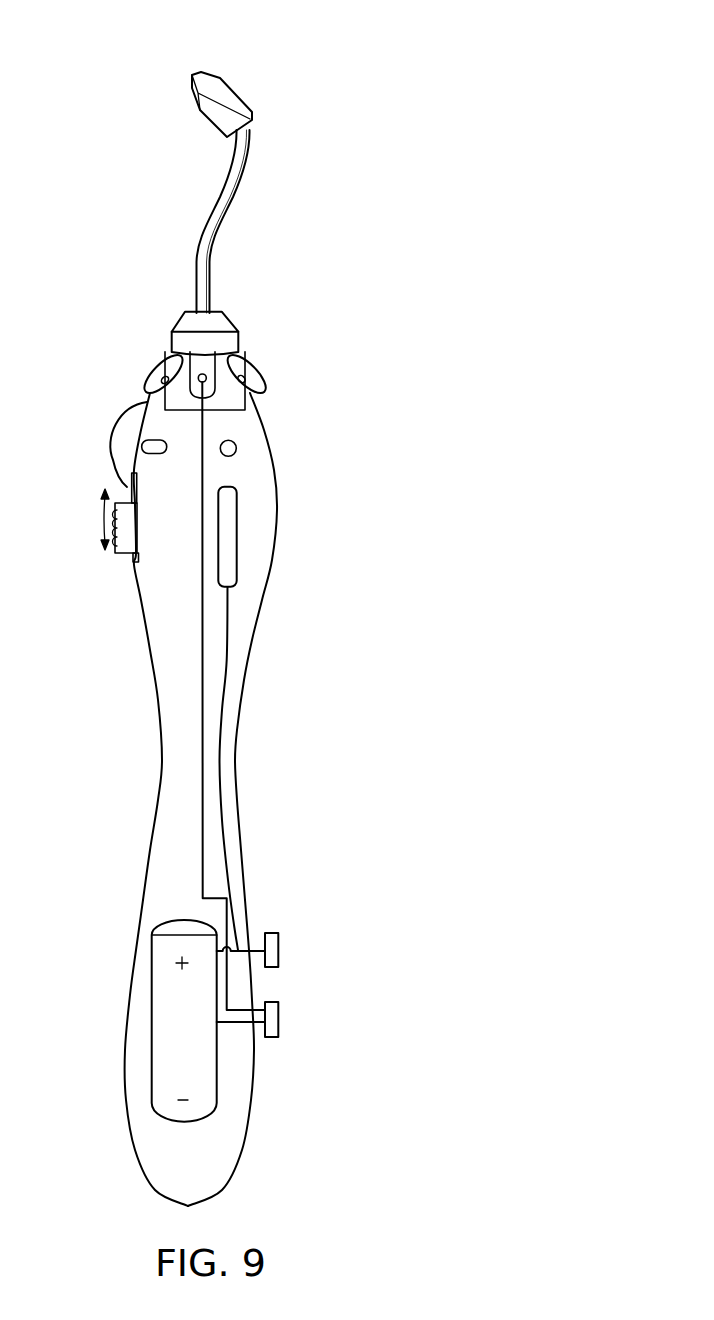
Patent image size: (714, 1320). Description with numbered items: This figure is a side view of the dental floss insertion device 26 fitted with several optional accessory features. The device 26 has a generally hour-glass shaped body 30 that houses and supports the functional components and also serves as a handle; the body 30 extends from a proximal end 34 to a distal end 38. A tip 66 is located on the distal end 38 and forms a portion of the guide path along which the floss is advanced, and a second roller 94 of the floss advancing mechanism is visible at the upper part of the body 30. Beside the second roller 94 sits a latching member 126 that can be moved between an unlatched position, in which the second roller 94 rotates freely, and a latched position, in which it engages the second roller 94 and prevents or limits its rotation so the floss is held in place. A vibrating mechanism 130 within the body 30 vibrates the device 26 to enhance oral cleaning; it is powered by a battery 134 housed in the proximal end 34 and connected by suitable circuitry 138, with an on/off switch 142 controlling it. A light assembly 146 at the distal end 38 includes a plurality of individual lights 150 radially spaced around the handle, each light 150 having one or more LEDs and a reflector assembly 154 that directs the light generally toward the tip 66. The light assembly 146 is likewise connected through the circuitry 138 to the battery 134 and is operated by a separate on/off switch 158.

The dental floss insertion device 26 is at (282, 77).
The body 30 is at (158, 625).
The proximal end 34 is at (137, 987).
The distal end 38 is at (257, 429).
The tip 66 is at (225, 196).
The second roller 94 is at (125, 440).
The latching member 126 is at (115, 548).
The vibrating mechanism 130 is at (228, 537).
The battery 134 is at (160, 1070).
The circuitry 138 is at (203, 842).
The on/off switch 142 is at (279, 950).
The light assembly 146 is at (130, 356).
The lights 150 is at (167, 365).
The reflector assembly 154 is at (147, 387).
The on/off switch 158 is at (279, 1018).